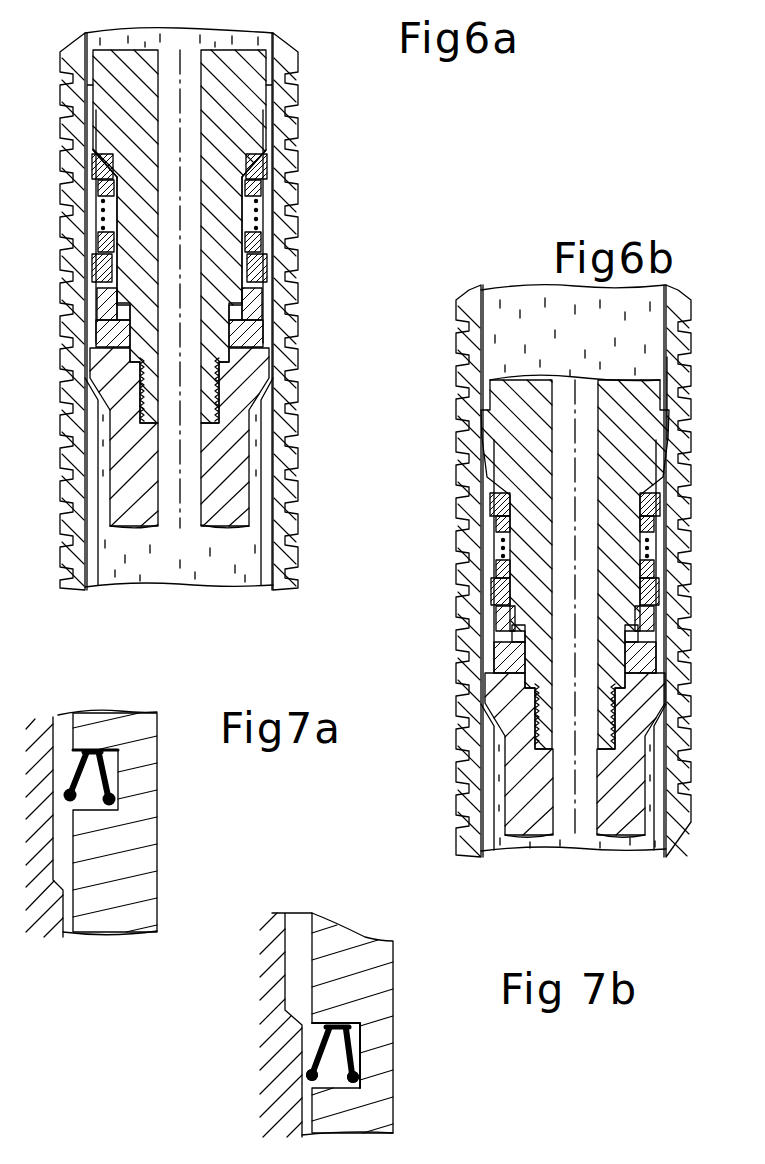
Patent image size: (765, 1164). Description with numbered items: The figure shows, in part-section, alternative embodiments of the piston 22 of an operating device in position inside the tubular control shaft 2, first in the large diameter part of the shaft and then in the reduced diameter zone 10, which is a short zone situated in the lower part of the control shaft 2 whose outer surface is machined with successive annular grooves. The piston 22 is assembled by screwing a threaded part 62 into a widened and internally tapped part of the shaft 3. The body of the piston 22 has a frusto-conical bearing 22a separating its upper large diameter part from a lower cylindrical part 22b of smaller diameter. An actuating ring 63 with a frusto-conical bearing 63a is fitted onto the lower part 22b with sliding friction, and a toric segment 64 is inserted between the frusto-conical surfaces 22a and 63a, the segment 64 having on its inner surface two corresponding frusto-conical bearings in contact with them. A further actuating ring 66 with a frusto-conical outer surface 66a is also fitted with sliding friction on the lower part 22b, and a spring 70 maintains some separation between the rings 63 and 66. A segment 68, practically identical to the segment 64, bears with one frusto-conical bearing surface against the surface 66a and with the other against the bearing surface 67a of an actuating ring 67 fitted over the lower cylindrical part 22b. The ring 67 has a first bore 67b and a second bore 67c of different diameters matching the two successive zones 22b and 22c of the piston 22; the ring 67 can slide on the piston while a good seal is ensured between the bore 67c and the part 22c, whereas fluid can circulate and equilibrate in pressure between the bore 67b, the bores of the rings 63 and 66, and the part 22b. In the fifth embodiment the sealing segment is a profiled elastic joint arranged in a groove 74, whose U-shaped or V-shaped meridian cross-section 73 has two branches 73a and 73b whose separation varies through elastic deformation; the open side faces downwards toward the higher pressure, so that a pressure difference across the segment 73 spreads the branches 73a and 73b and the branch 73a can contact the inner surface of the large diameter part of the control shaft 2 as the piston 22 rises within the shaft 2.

In FIG. 7B, the tubular control shaft 2 is at (288, 938).
In FIG. 6A, the shaft 3 is at (228, 468).
In FIG. 6B, the reduced diameter zone 10 is at (665, 522).
In FIG. 6A, the piston 22 is at (222, 115).
In FIG. 6B, the piston 22 is at (628, 460).
In FIG. 7A, the piston 22 is at (120, 730).
In FIG. 7B, the piston 22 is at (365, 975).
In FIG. 6A, the frusto-conical bearing 22a is at (243, 170).
In FIG. 6A, the lower cylindrical part 22b is at (243, 225).
In FIG. 6A, the piston zone 22c is at (245, 348).
In FIG. 6A, the threaded part 62 is at (70, 367).
In FIG. 6A, the actuating ring 63 is at (258, 188).
In FIG. 6A, the frusto-conical bearing 63a is at (262, 166).
In FIG. 6A, the toric segment 64 is at (68, 143).
In FIG. 6A, the actuating ring 66 is at (258, 242).
In FIG. 6A, the frusto-conical surface 66a is at (258, 268).
In FIG. 6A, the actuating ring 67 is at (236, 312).
In FIG. 6A, the bearing surface 67a is at (256, 296).
In FIG. 6A, the first bore 67b is at (95, 275).
In FIG. 6A, the second bore 67c is at (68, 302).
In FIG. 6A, the segment 68 is at (92, 243).
In FIG. 6A, the spring 70 is at (95, 207).
In FIG. 7A, the sealing segment 73 is at (107, 768).
In FIG. 7B, the sealing segment 73 is at (360, 1047).
In FIG. 7B, the branch 73a is at (330, 1032).
In FIG. 7B, the branch 73b is at (360, 1075).
In FIG. 7B, the groove 74 is at (360, 1022).